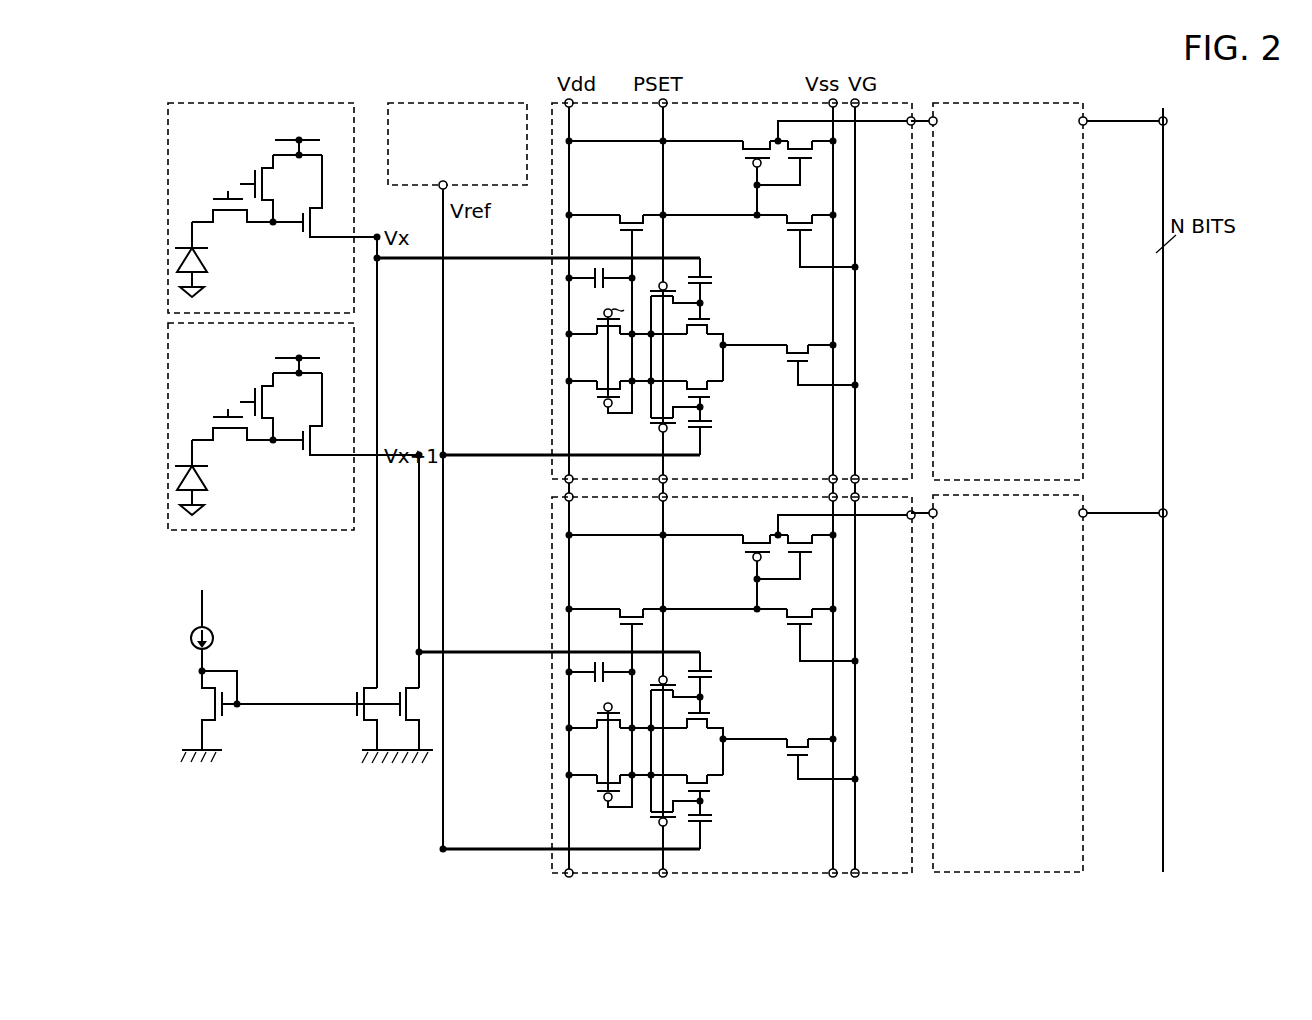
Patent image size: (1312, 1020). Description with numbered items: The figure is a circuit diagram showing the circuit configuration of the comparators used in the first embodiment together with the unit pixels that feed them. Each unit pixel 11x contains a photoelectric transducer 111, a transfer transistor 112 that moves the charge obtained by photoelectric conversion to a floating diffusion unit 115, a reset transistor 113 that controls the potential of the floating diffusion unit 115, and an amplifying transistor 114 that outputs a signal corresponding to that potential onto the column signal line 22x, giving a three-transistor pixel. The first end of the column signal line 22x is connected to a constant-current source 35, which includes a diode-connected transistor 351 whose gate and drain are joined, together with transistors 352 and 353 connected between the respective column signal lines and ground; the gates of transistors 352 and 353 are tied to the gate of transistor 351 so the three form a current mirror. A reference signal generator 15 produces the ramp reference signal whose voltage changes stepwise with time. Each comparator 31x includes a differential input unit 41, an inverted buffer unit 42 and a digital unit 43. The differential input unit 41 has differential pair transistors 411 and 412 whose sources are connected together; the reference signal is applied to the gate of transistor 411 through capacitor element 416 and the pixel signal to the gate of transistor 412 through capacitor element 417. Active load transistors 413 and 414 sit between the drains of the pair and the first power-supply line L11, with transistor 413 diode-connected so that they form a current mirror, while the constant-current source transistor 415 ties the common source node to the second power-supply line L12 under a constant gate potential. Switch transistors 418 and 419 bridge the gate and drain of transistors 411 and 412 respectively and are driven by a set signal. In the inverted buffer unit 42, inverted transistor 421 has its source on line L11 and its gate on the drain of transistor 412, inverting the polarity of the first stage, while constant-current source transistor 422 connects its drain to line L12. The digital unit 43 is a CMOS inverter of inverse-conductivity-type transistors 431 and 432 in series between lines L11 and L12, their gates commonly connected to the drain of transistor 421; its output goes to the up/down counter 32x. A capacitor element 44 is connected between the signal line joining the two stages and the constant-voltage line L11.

The unit pixel 11x is at (272, 186).
The photoelectric transducer 111 is at (208, 270).
The transfer transistor 112 is at (230, 224).
The reset transistor 113 is at (268, 186).
The amplifying transistor 114 is at (312, 222).
The floating diffusion unit 115 is at (277, 226).
The reference signal generator 15 is at (452, 100).
The column signal line 22x is at (372, 599).
The comparator 31x is at (703, 269).
The up/down counter 32x is at (1085, 357).
The constant-current source 35 is at (296, 714).
The transistor 351 is at (200, 704).
The transistor 352 is at (366, 724).
The transistor 353 is at (408, 724).
The differential input unit 41 is at (688, 341).
The inverted buffer unit 42 is at (717, 210).
The digital unit 43 is at (815, 137).
The capacitor element 44 is at (595, 266).
The differential pair transistor 411 is at (711, 392).
The differential pair transistor 412 is at (694, 337).
The active load transistor 413 is at (619, 382).
The active load transistor 414 is at (602, 337).
The constant-current source transistor 415 is at (794, 345).
The capacitor element 416 is at (713, 424).
The capacitor element 417 is at (713, 280).
The switch transistor 418 is at (653, 432).
The switch transistor 419 is at (670, 288).
The inverted transistor 421 is at (629, 210).
The constant-current source transistor 422 is at (795, 218).
The inverse-conductivity-type transistor 431 is at (754, 147).
The inverse-conductivity-type transistor 432 is at (810, 150).
The power-supply line L11 is at (568, 439).
The power-supply line L12 is at (844, 456).